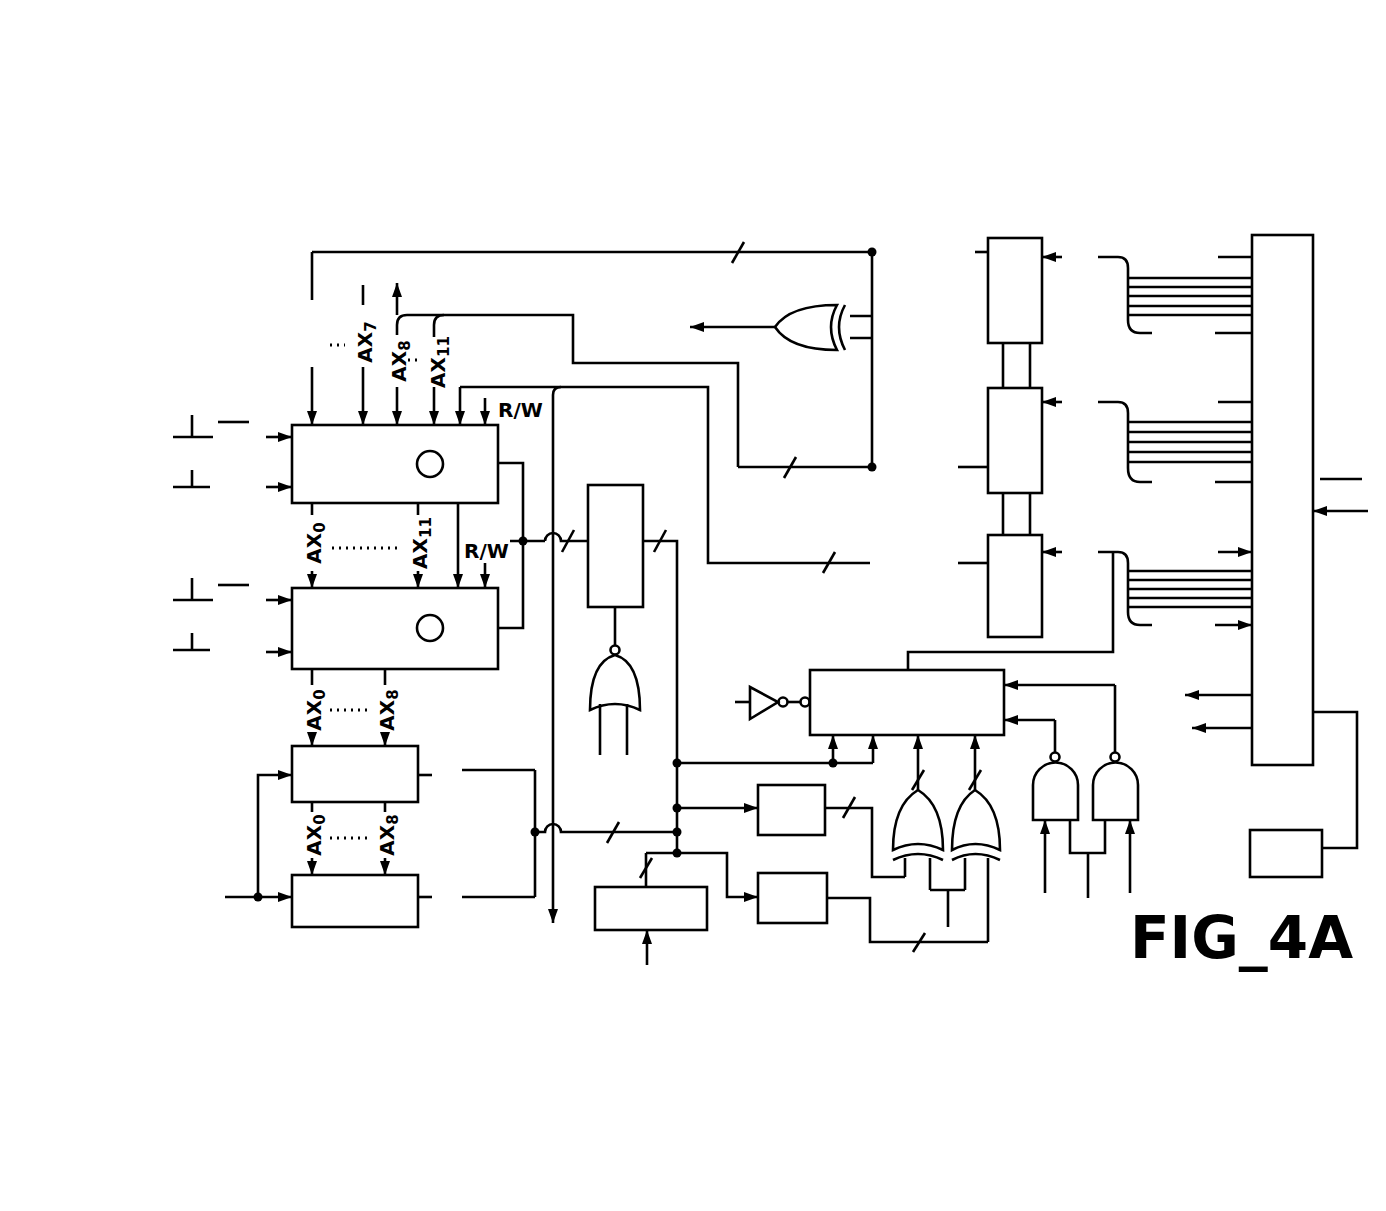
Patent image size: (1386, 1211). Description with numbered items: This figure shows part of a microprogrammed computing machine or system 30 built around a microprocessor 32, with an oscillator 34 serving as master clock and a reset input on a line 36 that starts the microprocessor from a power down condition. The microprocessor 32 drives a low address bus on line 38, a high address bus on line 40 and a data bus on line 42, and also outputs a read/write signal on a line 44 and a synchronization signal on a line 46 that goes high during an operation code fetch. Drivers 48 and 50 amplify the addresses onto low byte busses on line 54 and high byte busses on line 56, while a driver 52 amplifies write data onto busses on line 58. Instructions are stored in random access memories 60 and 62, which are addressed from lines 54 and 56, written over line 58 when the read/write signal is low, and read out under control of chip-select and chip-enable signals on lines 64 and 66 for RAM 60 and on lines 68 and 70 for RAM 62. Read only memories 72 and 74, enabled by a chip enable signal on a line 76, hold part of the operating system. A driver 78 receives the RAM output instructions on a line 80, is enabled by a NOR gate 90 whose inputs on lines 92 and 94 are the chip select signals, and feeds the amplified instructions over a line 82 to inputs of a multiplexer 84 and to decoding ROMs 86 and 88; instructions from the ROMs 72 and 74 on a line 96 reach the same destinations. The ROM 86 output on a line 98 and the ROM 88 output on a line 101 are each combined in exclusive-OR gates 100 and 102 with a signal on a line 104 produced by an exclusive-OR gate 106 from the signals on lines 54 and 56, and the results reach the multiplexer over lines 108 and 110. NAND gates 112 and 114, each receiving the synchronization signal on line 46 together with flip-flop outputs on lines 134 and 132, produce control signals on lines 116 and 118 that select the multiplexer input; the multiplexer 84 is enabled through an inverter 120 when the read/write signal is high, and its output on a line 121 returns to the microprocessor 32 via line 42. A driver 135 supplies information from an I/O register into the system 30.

The computing machine or system 30 is at (530, 241).
The microprocessor 32 is at (1297, 337).
The oscillator 34 is at (1278, 829).
The reset input line 36 is at (1343, 515).
The address bus line AB7-0 38 is at (1057, 253).
The address bus line AB15-8 40 is at (1057, 398).
The data bus line DB7-0 42 is at (1057, 548).
The read/write signal line 44 is at (740, 702).
The synchronization signal line 46 is at (1088, 866).
The driver 48 is at (1024, 238).
The driver 50 is at (987, 401).
The driver 52 is at (988, 540).
The low byte address bus line AX7-0 54 is at (886, 248).
The high byte address bus line AX15-8 56 is at (885, 470).
The data bus line DX7-0 58 is at (553, 427).
The random access memory 60 is at (498, 446).
The random access memory 62 is at (500, 669).
The chip-select line 64 is at (232, 424).
The chip-enable line 66 is at (232, 476).
The chip-select line 68 is at (232, 583).
The chip-enable line 70 is at (232, 641).
The read only memory 72 is at (410, 746).
The read only memory 74 is at (410, 875).
The chip enable line 76 is at (237, 900).
The driver 78 is at (643, 492).
The line 80 is at (582, 535).
The line 82 is at (680, 599).
The multiplexer 84 is at (853, 668).
The read only memory 86 is at (755, 790).
The read only memory 88 is at (805, 923).
The NOR gate 90 is at (622, 666).
The input line 92 is at (627, 737).
The input line 94 is at (600, 737).
The line 96 is at (532, 831).
The line 98 is at (870, 850).
The exclusive-OR gate 100 is at (898, 806).
The line 101 is at (967, 943).
The exclusive-OR gate 102 is at (1000, 820).
The line 104 is at (743, 325).
The exclusive-OR gate 106 is at (808, 303).
The line 108 is at (901, 765).
The line 110 is at (972, 762).
The NAND gate 112 is at (1033, 788).
The NAND gate 114 is at (1140, 785).
The line 116 is at (1038, 723).
The line 118 is at (1053, 688).
The inverter 120 is at (762, 686).
The line 121 is at (957, 650).
The line 132 is at (1131, 860).
The line 134 is at (1045, 879).
The driver 135 is at (708, 925).